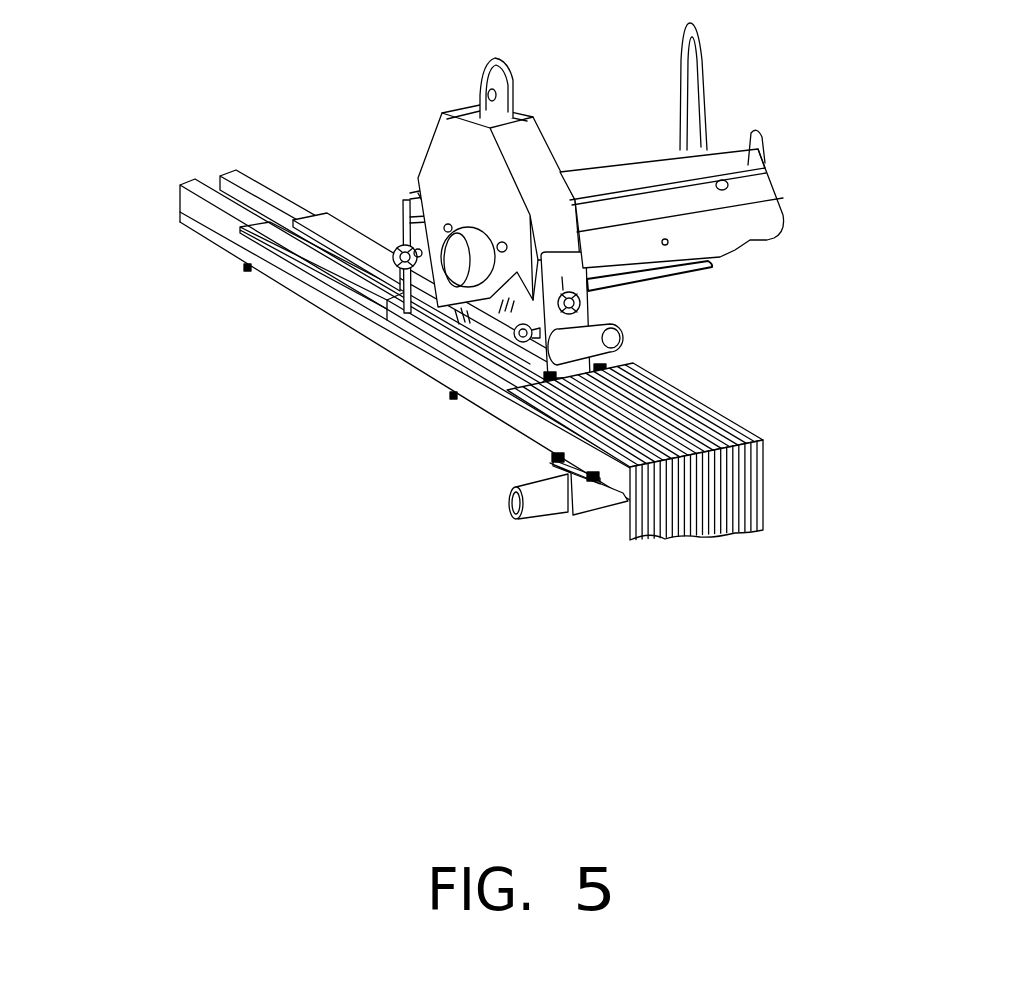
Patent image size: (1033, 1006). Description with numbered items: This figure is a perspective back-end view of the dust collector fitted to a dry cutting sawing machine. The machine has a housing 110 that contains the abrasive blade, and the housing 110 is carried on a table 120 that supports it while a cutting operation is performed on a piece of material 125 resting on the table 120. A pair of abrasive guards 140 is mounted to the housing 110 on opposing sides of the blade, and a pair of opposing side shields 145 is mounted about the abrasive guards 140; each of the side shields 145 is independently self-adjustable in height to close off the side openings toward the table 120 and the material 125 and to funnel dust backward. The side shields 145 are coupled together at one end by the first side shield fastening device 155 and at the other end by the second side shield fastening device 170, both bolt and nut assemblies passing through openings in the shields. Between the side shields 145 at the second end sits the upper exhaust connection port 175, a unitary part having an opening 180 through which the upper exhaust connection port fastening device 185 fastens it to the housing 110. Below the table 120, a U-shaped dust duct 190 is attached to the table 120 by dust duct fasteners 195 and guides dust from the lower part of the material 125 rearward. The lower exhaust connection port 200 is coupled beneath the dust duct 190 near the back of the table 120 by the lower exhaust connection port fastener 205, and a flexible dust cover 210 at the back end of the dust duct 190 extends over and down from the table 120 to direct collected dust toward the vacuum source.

The housing 110 is at (632, 167).
The table 120 is at (193, 185).
The material 125 is at (405, 302).
The abrasive guards 140 is at (443, 300).
The side shields 145 is at (403, 200).
The first side shield fastening device 155 is at (397, 252).
The second side shield fastening device 170 is at (523, 342).
The upper exhaust connection port 175 is at (627, 340).
The opening 180 is at (590, 293).
The upper exhaust connection port fastening device 185 is at (585, 308).
The dust duct 190 is at (180, 217).
The dust duct fasteners 195 is at (244, 268).
The lower exhaust connection port 200 is at (533, 512).
The lower exhaust connection port fastener 205 is at (570, 513).
The dust cover 210 is at (727, 433).